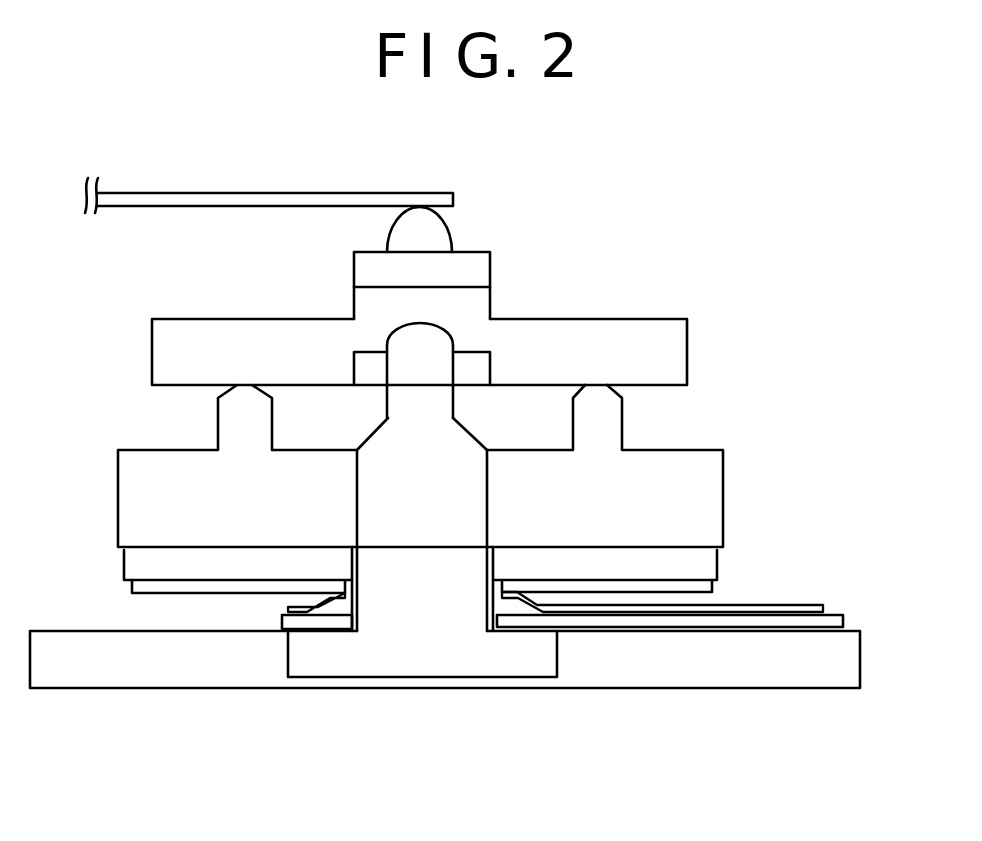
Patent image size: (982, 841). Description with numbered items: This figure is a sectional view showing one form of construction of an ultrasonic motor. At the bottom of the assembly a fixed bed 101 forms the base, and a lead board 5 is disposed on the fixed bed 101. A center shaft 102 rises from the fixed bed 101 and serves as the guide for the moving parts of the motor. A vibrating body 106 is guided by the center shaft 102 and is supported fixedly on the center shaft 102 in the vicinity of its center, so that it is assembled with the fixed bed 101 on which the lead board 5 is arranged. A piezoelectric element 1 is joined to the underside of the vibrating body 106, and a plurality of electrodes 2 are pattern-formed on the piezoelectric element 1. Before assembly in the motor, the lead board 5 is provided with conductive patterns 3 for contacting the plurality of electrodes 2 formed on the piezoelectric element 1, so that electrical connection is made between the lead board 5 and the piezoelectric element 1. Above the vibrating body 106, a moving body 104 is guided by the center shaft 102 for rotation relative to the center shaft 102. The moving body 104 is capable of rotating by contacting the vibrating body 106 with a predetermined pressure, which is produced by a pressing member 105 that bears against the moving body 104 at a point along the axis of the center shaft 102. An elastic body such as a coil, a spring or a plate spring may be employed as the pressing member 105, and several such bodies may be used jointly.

The piezoelectric element 1 is at (703, 563).
The electrodes 2 is at (697, 590).
The conductive patterns 3 is at (306, 616).
The lead board 5 is at (753, 620).
The fixed bed 101 is at (812, 675).
The center shaft 102 is at (427, 655).
The moving body 104 is at (673, 352).
The pressing member 105 is at (455, 197).
The vibrating body 106 is at (710, 492).